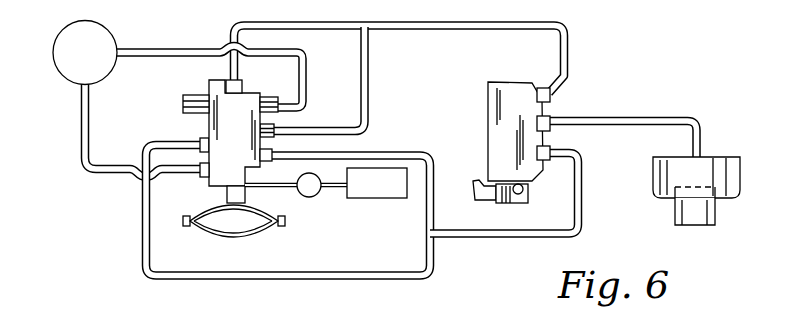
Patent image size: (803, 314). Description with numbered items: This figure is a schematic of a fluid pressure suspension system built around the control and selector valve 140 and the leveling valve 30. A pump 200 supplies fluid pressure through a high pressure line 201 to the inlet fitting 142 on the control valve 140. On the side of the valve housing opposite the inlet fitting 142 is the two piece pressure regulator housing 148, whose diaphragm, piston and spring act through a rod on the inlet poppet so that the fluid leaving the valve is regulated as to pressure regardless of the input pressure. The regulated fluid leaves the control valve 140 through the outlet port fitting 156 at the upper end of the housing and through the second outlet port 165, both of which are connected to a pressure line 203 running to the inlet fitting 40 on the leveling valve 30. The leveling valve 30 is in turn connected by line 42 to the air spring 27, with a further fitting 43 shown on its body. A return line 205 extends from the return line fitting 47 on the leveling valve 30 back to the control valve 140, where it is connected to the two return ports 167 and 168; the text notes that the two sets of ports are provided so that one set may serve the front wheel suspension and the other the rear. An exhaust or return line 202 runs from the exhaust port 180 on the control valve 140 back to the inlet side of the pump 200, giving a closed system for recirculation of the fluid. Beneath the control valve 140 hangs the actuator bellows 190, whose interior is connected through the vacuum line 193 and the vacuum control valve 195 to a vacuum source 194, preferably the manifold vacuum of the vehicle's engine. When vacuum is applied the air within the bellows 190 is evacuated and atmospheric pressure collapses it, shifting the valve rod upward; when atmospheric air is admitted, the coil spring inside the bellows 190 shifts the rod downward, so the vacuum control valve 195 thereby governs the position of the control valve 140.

The pump 200 is at (64, 36).
The high pressure line 201 is at (172, 38).
The exhaust or return line 202 is at (80, 147).
The pressure line 203 is at (407, 30).
The return line 205 is at (469, 236).
The control and selector valve 140 is at (250, 133).
The pressure regulator housing 148 is at (195, 95).
The outlet port fitting 156 is at (243, 89).
The inlet fitting 142 is at (281, 108).
The outlet port 165 is at (276, 131).
The return port 167 is at (203, 139).
The return port 168 is at (254, 164).
The exhaust port 180 is at (206, 176).
The actuator bellows 190 is at (240, 235).
The vacuum line 193 is at (262, 188).
The vacuum source 194 is at (386, 198).
The vacuum control valve 195 is at (317, 194).
The leveling valve 30 is at (488, 122).
The inlet fitting 40 is at (552, 95).
The line 42 is at (645, 118).
The valve fitting 43 is at (552, 126).
The return line fitting 47 is at (541, 159).
The air spring 27 is at (718, 160).